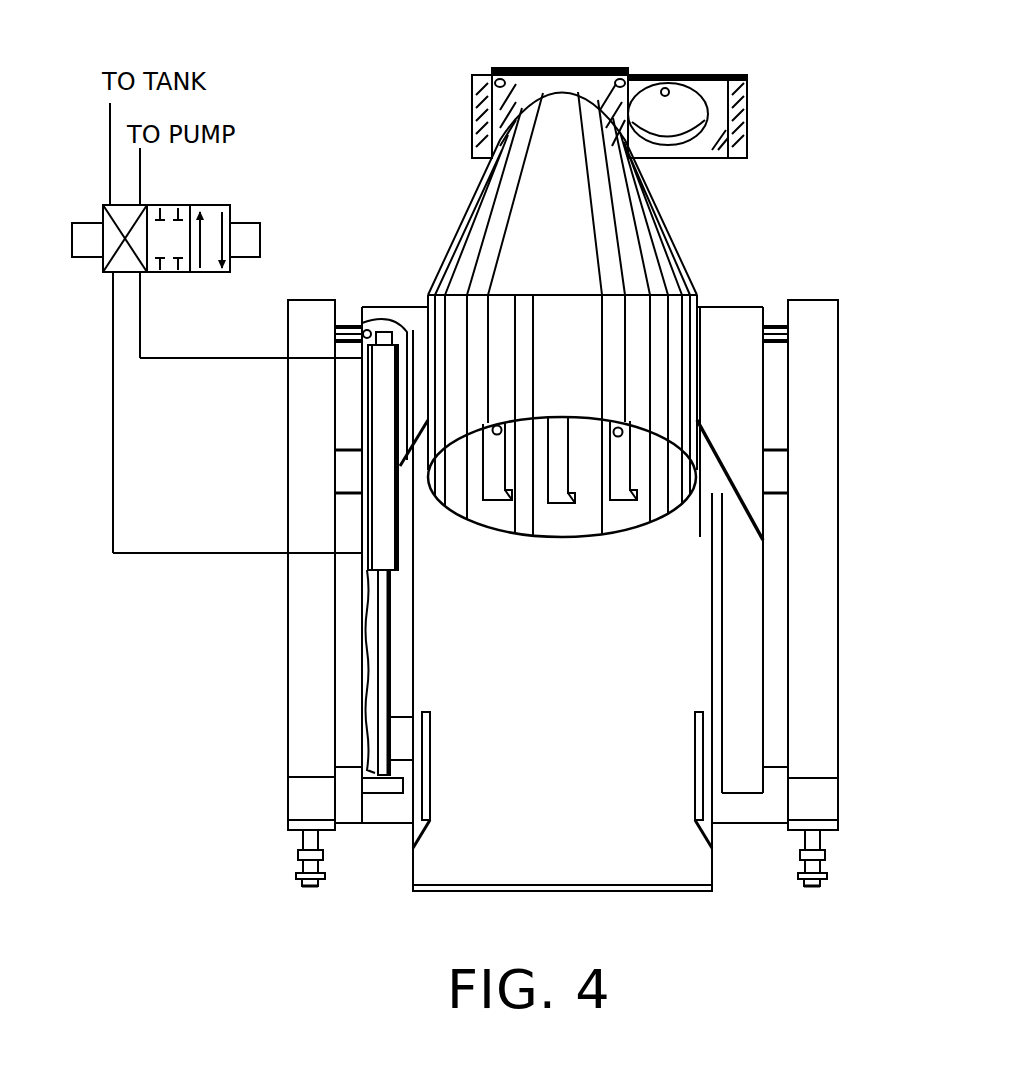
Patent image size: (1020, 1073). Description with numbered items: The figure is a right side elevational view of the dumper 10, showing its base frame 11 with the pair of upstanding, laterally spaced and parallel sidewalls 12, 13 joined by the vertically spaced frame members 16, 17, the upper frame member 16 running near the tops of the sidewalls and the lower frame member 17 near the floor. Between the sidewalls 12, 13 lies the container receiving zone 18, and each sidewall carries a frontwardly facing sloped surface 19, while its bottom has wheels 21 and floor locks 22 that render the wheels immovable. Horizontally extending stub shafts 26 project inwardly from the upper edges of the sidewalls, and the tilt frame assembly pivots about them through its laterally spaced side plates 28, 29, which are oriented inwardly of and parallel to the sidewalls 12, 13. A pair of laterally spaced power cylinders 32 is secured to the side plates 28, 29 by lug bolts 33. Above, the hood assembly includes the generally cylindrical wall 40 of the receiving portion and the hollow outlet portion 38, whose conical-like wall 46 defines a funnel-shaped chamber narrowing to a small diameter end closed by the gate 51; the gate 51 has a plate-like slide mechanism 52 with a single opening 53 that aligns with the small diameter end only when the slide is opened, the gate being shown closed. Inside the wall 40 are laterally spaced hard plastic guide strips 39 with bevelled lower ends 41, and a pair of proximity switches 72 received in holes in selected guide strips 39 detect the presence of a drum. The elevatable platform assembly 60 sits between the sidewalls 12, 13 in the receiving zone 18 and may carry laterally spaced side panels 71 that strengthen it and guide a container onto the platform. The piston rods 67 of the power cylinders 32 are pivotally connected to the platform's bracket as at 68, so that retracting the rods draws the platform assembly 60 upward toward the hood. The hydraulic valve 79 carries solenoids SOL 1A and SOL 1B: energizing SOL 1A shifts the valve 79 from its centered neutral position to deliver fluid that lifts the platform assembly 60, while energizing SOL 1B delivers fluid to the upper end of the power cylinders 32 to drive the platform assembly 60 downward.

The dumper 10 is at (362, 180).
The base frame 11 is at (288, 716).
The sidewall 12 is at (298, 568).
The sidewall 13 is at (820, 585).
The frame member 16 is at (352, 495).
The frame member 17 is at (368, 808).
The container receiving zone 18 is at (390, 894).
The sloped surface 19 is at (298, 641).
The wheels 21 is at (310, 890).
The floor locks 22 is at (296, 877).
The stub shafts 26 is at (347, 325).
The side plate 28 is at (362, 404).
The side plate 29 is at (770, 384).
The power cylinders 32 is at (378, 434).
The lug bolt 33 is at (384, 331).
The outlet portion 38 is at (660, 204).
The guide strips 39 is at (498, 472).
The wall 40 is at (562, 416).
The bevelled lower ends 41 is at (560, 500).
The conical-like wall 46 is at (650, 241).
The gate 51 is at (547, 68).
The slide mechanism 52 is at (722, 76).
The opening 53 is at (665, 87).
The elevatable platform assembly 60 is at (692, 893).
The piston rods 67 is at (390, 668).
The pivotal connection 68 is at (376, 778).
The side panels 71 is at (432, 777).
The proximity switches 72 is at (501, 427).
The valve 79 is at (176, 205).
The solenoid SOL 1A is at (72, 240).
The solenoid SOL 1B is at (260, 240).